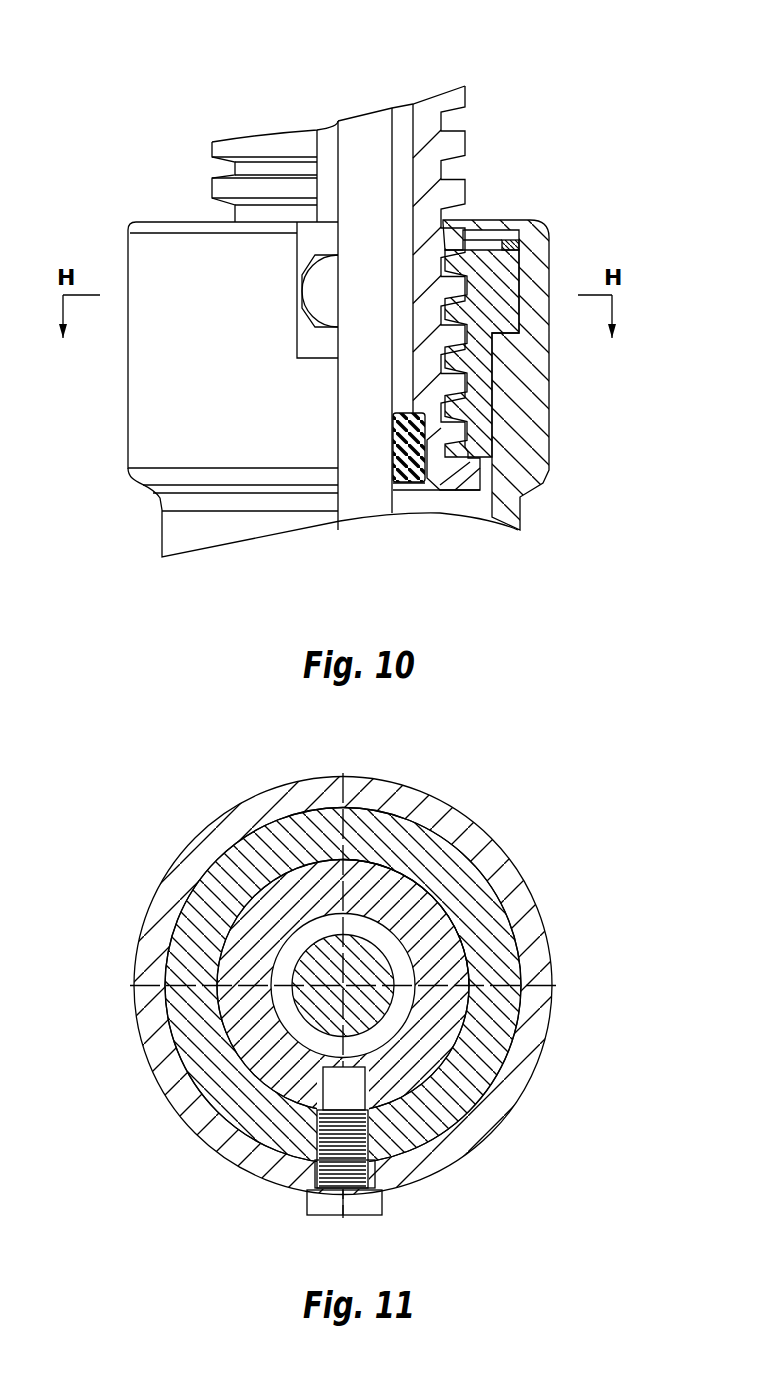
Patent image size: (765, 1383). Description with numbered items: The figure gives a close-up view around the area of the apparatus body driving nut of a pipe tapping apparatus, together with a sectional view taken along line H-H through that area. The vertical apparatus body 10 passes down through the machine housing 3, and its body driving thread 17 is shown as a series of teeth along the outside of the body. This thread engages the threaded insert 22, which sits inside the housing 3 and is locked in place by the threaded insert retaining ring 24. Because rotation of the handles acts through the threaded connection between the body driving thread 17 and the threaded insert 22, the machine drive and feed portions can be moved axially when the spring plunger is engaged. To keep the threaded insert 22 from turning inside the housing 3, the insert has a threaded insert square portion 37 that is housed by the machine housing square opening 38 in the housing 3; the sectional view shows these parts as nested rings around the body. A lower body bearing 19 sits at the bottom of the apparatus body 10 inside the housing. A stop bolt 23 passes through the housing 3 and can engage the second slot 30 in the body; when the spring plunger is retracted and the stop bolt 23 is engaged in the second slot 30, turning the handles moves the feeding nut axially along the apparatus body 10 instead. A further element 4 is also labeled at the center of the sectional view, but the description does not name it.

In FIG. 10, the housing 3 is at (180, 318).
In FIG. 11, the housing 3 is at (490, 1108).
In FIG. 10, the rod 4 is at (365, 375).
In FIG. 11, the rod 4 is at (356, 963).
In FIG. 10, the apparatus body 10 is at (425, 120).
In FIG. 11, the apparatus body 10 is at (440, 956).
In FIG. 10, the body driving thread 17 is at (470, 183).
In FIG. 11, the body driving thread 17 is at (257, 877).
In FIG. 10, the lower body bearing 19 is at (410, 452).
In FIG. 10, the threaded insert 22 is at (498, 315).
In FIG. 11, the threaded insert 22 is at (487, 1030).
In FIG. 10, the stop bolt 23 is at (323, 293).
In FIG. 11, the stop bolt 23 is at (365, 1200).
In FIG. 10, the threaded insert retaining ring 24 is at (510, 241).
In FIG. 10, the second slot 30 is at (323, 146).
In FIG. 11, the second slot 30 is at (316, 1098).
In FIG. 10, the threaded insert square portion 37 is at (490, 388).
In FIG. 10, the machine housing square opening 38 is at (497, 428).